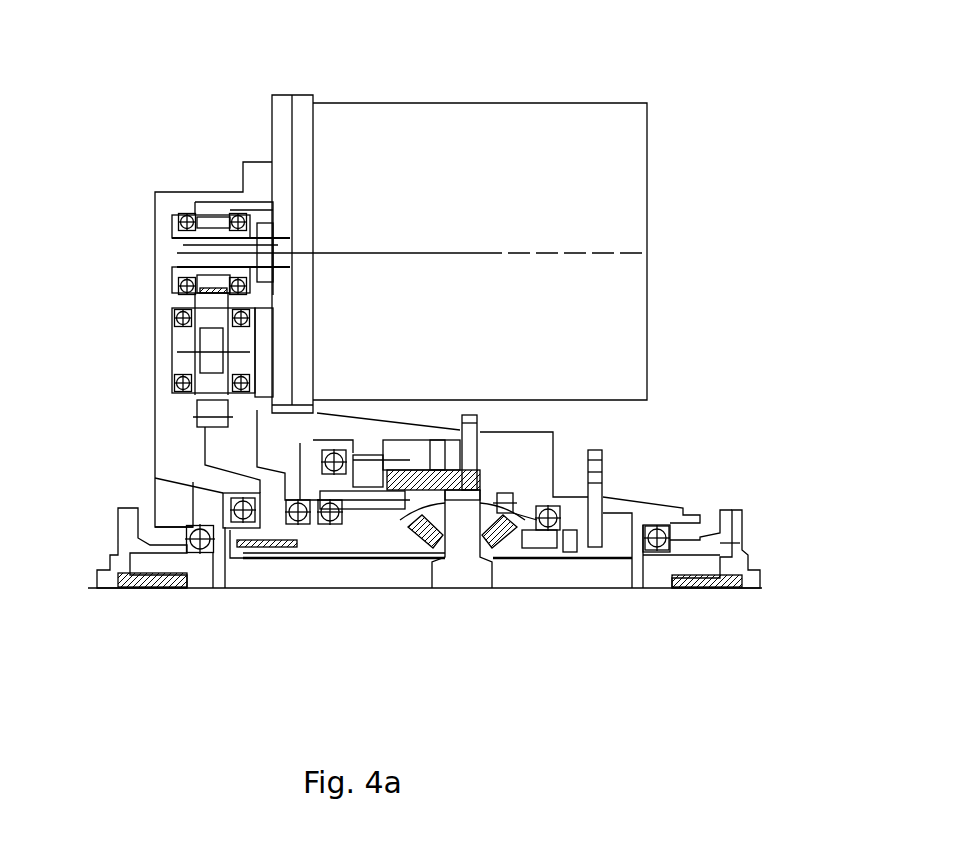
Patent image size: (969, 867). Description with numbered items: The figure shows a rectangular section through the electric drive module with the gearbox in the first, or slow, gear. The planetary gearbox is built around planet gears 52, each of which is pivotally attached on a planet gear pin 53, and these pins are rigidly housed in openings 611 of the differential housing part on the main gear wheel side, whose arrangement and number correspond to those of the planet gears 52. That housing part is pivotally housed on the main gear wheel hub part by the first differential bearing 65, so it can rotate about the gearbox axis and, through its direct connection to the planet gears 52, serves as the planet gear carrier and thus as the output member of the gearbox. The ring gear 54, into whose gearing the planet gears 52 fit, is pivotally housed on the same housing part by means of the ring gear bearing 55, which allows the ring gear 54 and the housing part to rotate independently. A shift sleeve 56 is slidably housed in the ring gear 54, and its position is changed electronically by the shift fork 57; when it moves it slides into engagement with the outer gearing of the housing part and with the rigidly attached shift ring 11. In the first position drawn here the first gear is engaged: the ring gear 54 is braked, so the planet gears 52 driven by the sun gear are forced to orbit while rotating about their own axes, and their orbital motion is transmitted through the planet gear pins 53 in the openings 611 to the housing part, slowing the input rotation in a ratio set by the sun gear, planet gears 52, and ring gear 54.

The shift ring 11 is at (440, 465).
The planet gear 52 is at (375, 485).
The planet gear pin 53 is at (355, 470).
The ring gear 54 is at (366, 470).
The ring gear bearing 55 is at (340, 490).
The shift sleeve 56 is at (483, 480).
The shift fork 57 is at (470, 470).
The first differential bearing 65 is at (310, 497).
The opening 611 is at (405, 475).